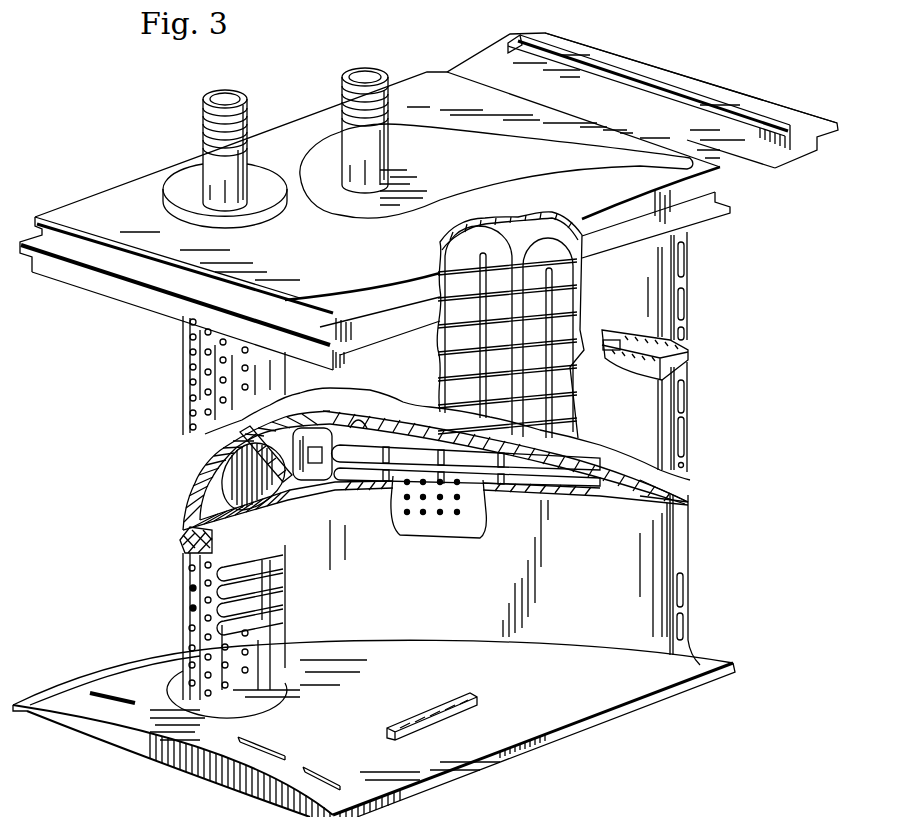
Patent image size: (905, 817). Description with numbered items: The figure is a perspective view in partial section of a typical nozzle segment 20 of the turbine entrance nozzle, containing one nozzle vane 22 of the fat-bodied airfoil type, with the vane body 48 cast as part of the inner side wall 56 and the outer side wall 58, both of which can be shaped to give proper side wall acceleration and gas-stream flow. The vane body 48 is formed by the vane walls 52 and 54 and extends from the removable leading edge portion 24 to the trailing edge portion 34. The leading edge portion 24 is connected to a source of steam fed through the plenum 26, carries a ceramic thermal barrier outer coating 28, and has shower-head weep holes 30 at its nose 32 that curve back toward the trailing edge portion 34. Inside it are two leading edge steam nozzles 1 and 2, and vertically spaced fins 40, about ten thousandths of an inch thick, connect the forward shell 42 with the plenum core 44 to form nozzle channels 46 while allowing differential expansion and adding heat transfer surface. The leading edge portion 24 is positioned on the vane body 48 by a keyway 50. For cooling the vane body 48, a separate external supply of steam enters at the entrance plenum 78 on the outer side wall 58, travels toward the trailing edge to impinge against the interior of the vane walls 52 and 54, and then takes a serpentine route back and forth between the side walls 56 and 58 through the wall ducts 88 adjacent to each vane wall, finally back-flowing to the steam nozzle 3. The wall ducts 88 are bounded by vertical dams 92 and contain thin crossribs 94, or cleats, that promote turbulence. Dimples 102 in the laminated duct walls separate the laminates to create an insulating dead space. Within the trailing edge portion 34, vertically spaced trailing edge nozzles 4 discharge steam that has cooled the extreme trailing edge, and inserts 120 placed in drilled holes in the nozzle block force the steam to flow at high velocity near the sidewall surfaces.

The nozzle segment 20 is at (760, 47).
The outer side wall 58 is at (490, 73).
The entrance plenum 78 is at (343, 83).
The plenum 26 is at (203, 112).
The wall ducts 88 is at (524, 325).
The trailing edge nozzles 4 is at (685, 305).
The inserts 120 is at (672, 349).
The vertical dams 92 is at (561, 368).
The crossribs 94 is at (565, 395).
The nose 32 is at (183, 374).
The plenum core 44 is at (268, 437).
The keyway 50 is at (298, 428).
The steam nozzle 3 is at (397, 413).
The leading edge steam nozzle 1 is at (232, 433).
The ceramic thermal barrier outer coating 28 is at (406, 448).
The leading edge steam nozzle 2 is at (285, 507).
The leading edge portion 24 is at (170, 553).
The forward shell 42 is at (275, 537).
The weep holes 30 is at (188, 604).
The nozzle channels 46 is at (285, 578).
The fins 40 is at (290, 606).
The dimples 102 is at (460, 505).
The vane wall 54 is at (655, 487).
The trailing edge portion 34 is at (697, 517).
The vane wall 52 is at (658, 558).
The vane body 48 is at (468, 620).
The nozzle vane 22 is at (569, 652).
The inner side wall 56 is at (447, 773).